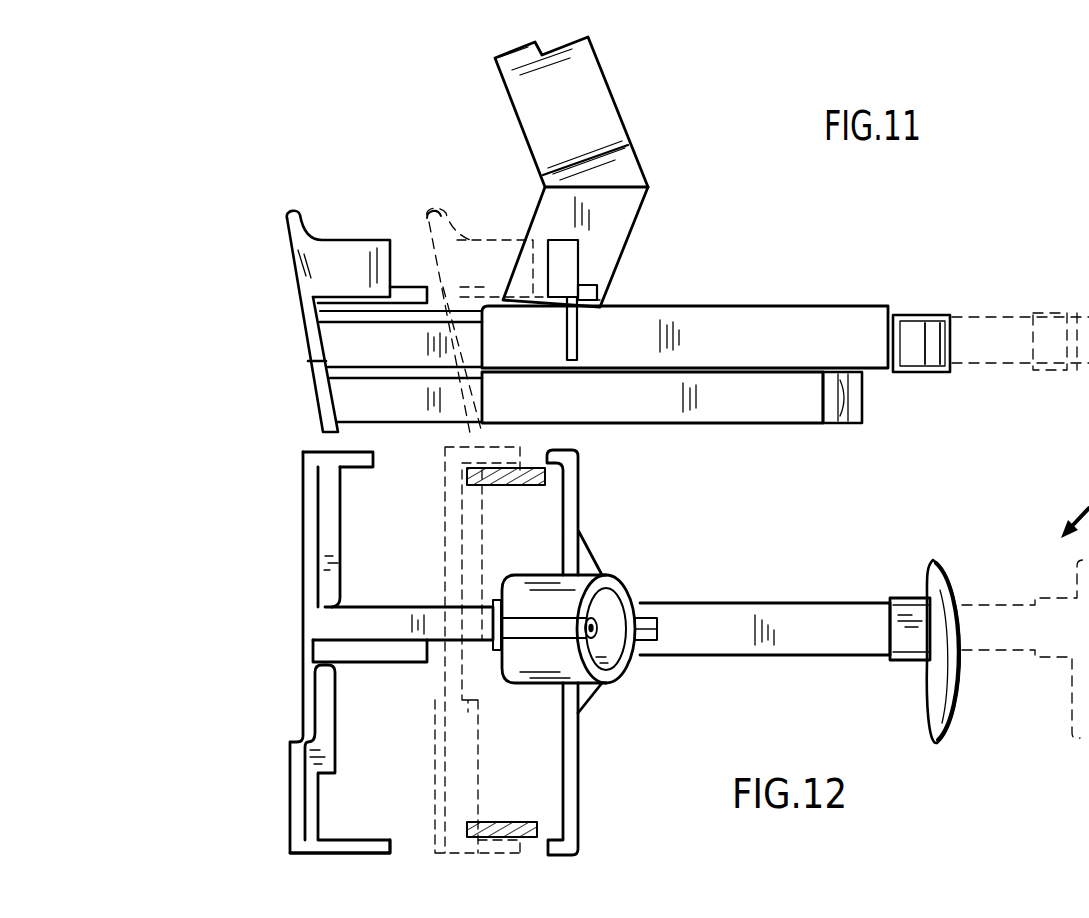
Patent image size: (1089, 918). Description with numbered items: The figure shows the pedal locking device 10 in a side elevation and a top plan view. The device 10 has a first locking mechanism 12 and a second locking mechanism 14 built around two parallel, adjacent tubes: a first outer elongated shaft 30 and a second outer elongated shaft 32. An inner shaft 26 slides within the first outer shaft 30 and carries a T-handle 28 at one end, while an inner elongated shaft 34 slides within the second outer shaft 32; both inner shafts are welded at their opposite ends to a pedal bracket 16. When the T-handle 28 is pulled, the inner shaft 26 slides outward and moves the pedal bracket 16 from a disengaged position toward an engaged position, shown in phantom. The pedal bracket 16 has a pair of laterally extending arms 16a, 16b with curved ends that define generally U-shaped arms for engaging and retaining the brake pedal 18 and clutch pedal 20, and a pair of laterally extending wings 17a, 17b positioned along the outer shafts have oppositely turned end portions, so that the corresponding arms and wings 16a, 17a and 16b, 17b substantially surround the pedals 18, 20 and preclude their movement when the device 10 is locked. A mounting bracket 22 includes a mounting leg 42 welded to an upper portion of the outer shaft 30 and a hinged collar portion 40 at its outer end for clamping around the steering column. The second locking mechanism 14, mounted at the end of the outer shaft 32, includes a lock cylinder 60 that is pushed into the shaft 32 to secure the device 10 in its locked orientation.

In FIG. 11, the pedal locking device 10 is at (1033, 255).
In FIG. 11, the first locking mechanism 12 is at (942, 300).
In FIG. 12, the first locking mechanism 12 is at (915, 566).
In FIG. 11, the second locking mechanism 14 is at (875, 412).
In FIG. 11, the pedal bracket 16 is at (297, 330).
In FIG. 12, the pedal bracket 16 is at (283, 700).
In FIG. 12, the arm 16a is at (305, 458).
In FIG. 11, the arm 16b is at (345, 239).
In FIG. 12, the arm 16b is at (300, 810).
In FIG. 12, the wing 17a is at (580, 483).
In FIG. 11, the wing 17b is at (615, 320).
In FIG. 12, the wing 17b is at (580, 777).
In FIG. 12, the brake pedal 18 is at (513, 490).
In FIG. 12, the clutch pedal 20 is at (500, 822).
In FIG. 11, the mounting bracket 22 is at (667, 175).
In FIG. 11, the inner shaft 26 is at (368, 357).
In FIG. 12, the inner shaft 26 is at (390, 610).
In FIG. 11, the T-handle 28 is at (948, 372).
In FIG. 12, the T-handle 28 is at (952, 563).
In FIG. 11, the first outer elongated shaft 30 is at (830, 318).
In FIG. 12, the first outer elongated shaft 30 is at (758, 600).
In FIG. 11, the second outer elongated shaft 32 is at (776, 425).
In FIG. 11, the inner elongated shaft 34 is at (371, 412).
In FIG. 11, the hinged collar portion 40 is at (632, 102).
In FIG. 12, the hinged collar portion 40 is at (632, 568).
In FIG. 11, the mounting leg 42 is at (620, 243).
In FIG. 12, the mounting leg 42 is at (645, 652).
In FIG. 11, the lock cylinder 60 is at (848, 424).